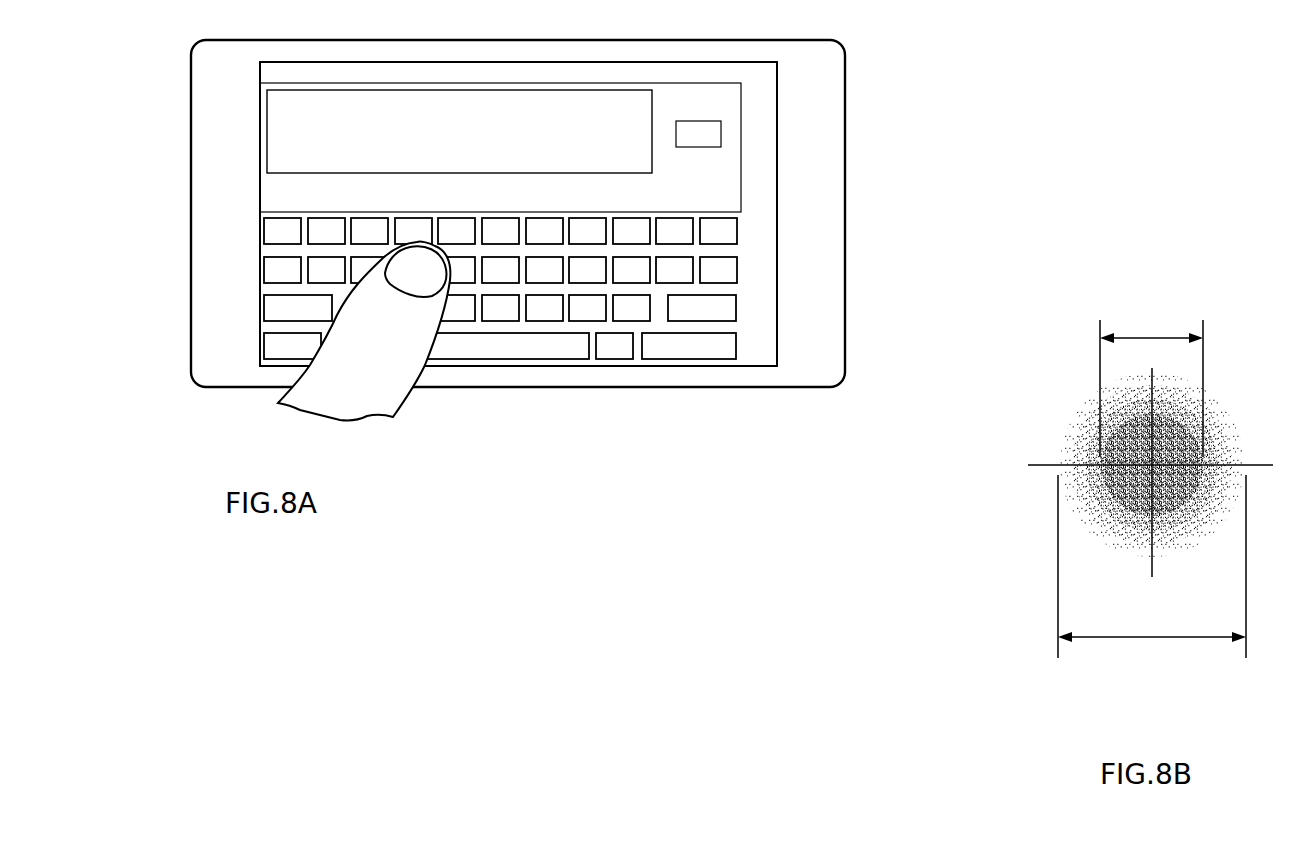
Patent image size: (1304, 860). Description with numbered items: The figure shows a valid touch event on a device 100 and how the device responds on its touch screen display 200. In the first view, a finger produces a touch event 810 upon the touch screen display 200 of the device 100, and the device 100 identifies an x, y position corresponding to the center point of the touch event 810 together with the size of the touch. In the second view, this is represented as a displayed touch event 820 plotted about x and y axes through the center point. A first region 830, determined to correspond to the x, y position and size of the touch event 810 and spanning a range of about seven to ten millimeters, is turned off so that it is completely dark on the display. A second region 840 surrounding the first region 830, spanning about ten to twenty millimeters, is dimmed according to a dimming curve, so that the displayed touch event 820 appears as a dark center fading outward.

In FIG. 8A, the device 100 is at (655, 398).
In FIG. 8A, the touch screen display 200 is at (676, 169).
In FIG. 8A, the touch event 810 is at (401, 357).
In FIG. 8B, the displayed touch event 820 is at (1004, 521).
In FIG. 8B, the first region 830 is at (1065, 335).
In FIG. 8B, the second region 840 is at (1087, 611).